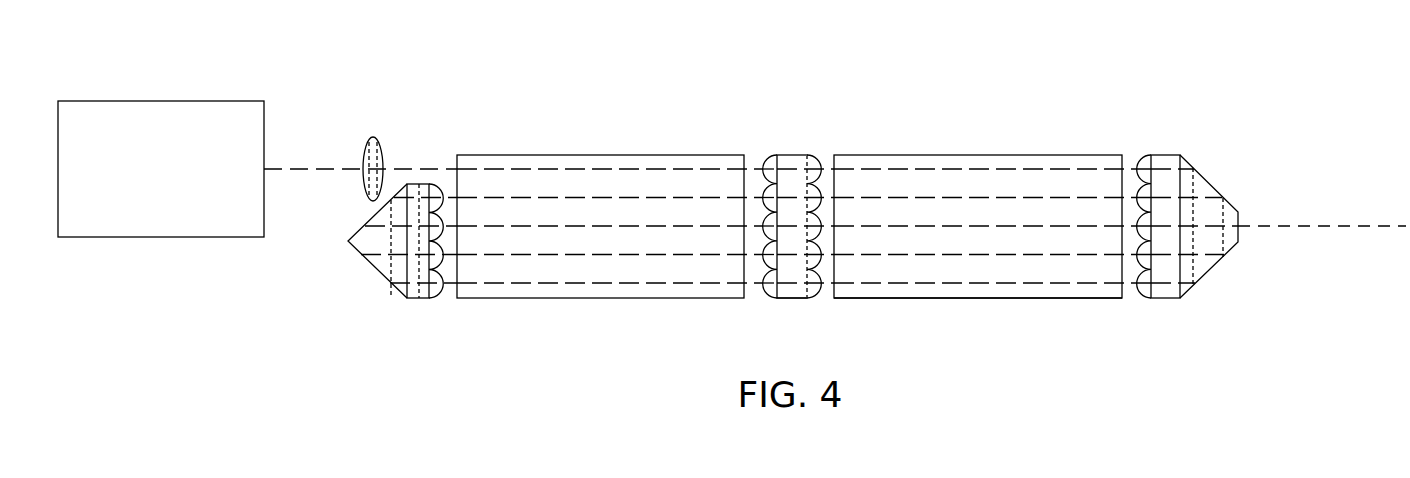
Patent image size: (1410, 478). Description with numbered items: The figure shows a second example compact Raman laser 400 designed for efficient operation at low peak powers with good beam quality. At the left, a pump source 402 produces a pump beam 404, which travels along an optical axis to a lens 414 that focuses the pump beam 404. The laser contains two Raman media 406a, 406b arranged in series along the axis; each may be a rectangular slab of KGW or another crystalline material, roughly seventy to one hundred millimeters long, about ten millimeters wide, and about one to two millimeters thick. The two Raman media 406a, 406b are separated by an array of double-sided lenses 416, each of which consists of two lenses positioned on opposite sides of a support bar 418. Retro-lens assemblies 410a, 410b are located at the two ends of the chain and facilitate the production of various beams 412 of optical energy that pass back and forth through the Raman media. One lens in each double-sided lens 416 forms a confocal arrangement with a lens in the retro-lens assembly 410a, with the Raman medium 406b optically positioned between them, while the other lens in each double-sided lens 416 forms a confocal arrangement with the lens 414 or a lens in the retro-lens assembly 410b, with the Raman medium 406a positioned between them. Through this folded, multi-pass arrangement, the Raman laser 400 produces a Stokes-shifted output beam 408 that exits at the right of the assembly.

The compact Raman laser 400 is at (872, 69).
The pump source 402 is at (158, 238).
The pump beam 404 is at (327, 167).
The Raman medium 406a is at (600, 154).
The Raman medium 406b is at (983, 154).
The Stokes-shifted output beam 408 is at (1348, 226).
The retro-lens assembly 410a is at (1212, 183).
The retro-lens assembly 410b is at (375, 272).
The beams of optical energy 412 is at (973, 299).
The lens 414 is at (373, 137).
The double-sided lens 416 is at (810, 155).
The support bar 418 is at (790, 299).